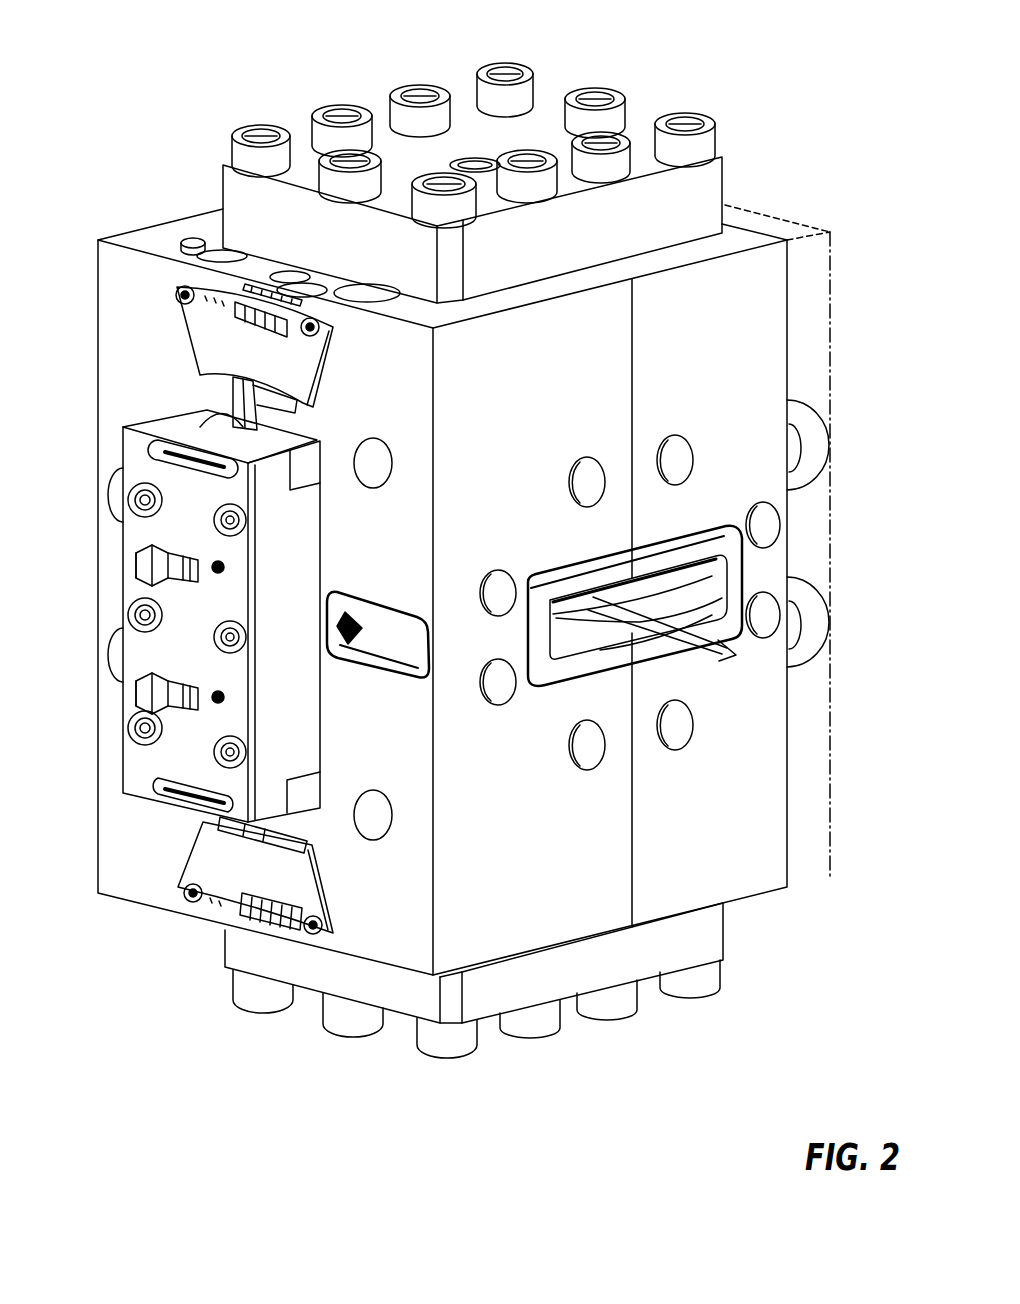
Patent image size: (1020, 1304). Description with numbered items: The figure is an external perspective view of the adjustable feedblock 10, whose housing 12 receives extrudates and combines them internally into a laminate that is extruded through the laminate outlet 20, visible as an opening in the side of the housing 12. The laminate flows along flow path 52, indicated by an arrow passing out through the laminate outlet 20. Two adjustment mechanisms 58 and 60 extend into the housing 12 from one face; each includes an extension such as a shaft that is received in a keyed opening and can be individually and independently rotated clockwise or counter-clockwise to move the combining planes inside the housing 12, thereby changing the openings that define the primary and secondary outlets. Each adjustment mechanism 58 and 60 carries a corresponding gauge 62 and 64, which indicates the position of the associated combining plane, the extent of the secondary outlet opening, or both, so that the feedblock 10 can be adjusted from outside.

The adjustable feedblock 10 is at (808, 95).
The housing 12 is at (163, 228).
The laminate outlet 20 is at (735, 567).
The flow path 52 is at (738, 656).
The adjustment mechanism 58 is at (145, 563).
The adjustment mechanism 60 is at (145, 693).
The gauge 62 is at (187, 326).
The gauge 64 is at (190, 862).